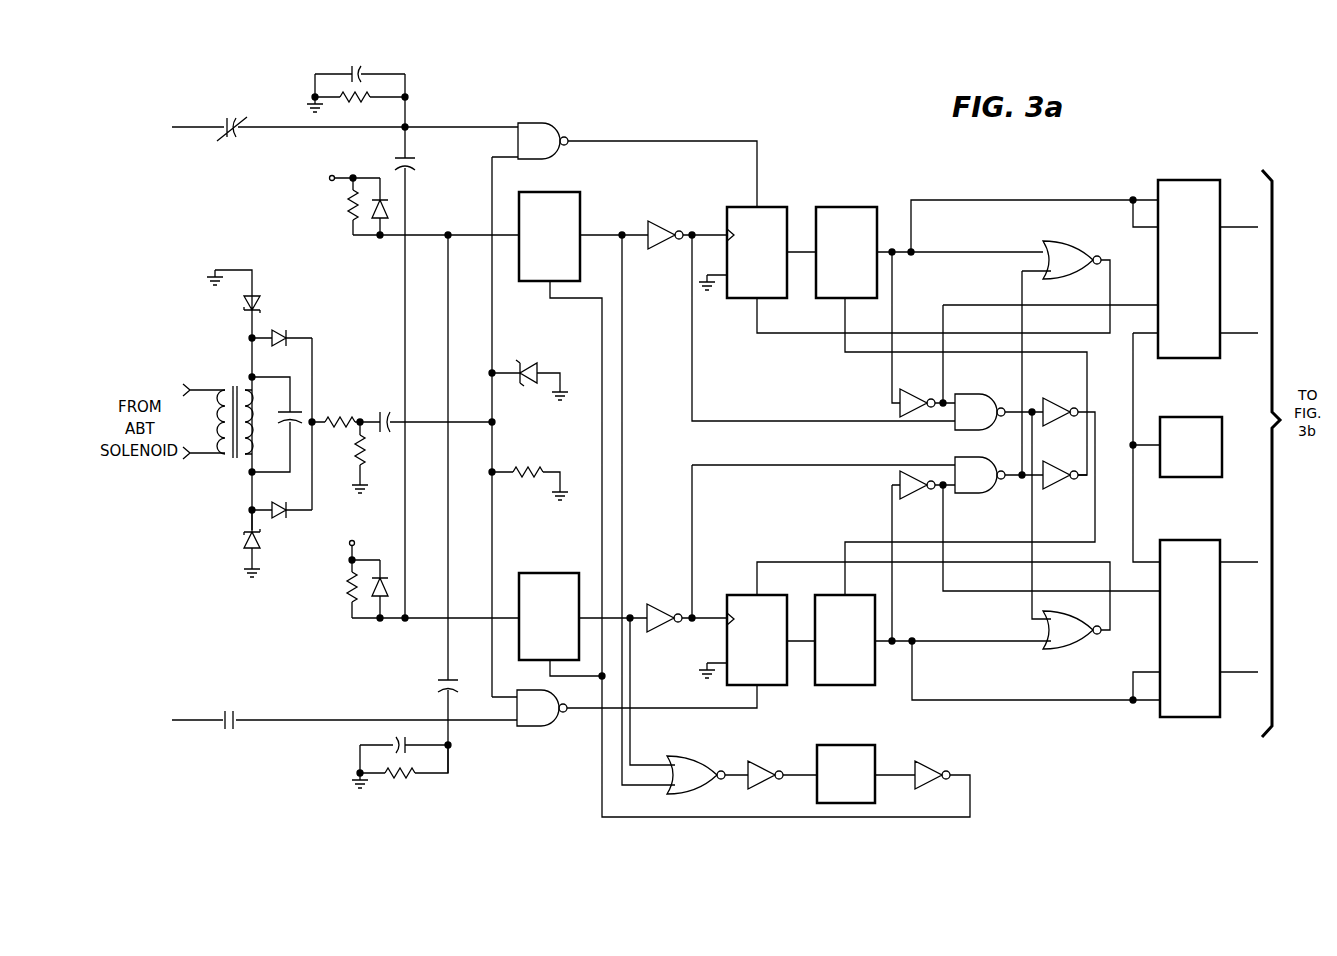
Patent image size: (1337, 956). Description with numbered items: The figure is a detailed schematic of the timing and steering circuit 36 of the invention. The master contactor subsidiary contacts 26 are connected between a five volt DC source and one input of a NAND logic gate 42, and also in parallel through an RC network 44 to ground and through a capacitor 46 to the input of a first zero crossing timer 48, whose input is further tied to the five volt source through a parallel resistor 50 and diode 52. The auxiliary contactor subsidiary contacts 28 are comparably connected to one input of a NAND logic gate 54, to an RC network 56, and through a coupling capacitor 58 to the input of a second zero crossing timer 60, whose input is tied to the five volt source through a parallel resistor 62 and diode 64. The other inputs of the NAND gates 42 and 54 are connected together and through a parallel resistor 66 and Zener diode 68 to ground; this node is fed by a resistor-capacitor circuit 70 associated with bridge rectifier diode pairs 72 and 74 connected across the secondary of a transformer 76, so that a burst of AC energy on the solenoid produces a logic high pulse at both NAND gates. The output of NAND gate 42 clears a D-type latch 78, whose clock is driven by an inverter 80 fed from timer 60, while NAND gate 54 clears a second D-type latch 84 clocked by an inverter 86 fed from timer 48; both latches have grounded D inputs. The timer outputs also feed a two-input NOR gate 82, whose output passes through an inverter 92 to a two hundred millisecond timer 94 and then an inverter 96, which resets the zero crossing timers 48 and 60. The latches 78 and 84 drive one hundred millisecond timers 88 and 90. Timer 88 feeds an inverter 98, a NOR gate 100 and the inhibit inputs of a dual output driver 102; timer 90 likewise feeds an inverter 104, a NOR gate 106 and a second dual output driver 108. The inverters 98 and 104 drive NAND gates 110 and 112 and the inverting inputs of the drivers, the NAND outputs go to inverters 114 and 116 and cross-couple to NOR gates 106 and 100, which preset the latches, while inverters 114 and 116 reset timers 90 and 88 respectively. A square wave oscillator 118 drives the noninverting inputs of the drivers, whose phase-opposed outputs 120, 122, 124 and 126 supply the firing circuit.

The contactor subsidiary contacts 26 is at (238, 131).
The contactor subsidiary contacts 28 is at (236, 722).
The timing and steering circuit 36 is at (845, 168).
The NAND logic gate 42 is at (566, 127).
The RC network 44 is at (421, 81).
The capacitor 46 is at (415, 162).
The first zero crossing timer 48 is at (541, 573).
The resistor 50 is at (348, 592).
The diode 52 is at (392, 584).
The NAND logic gate 54 is at (540, 727).
The RC network 56 is at (450, 788).
The coupling capacitor 58 is at (441, 681).
The second zero crossing timer 60 is at (578, 193).
The resistor 62 is at (348, 210).
The diode 64 is at (388, 210).
The resistor 66 is at (523, 468).
The Zener diode 68 is at (530, 367).
The resistor-capacitor circuit 70 is at (400, 433).
The bridge rectifier diode pair 72 is at (286, 319).
The bridge rectifier diode pair 74 is at (279, 532).
The transformer 76 is at (236, 470).
The D-type latch 78 is at (770, 207).
The inverter 80 is at (665, 228).
The two-input NOR gate 82 is at (680, 760).
The second D-type latch 84 is at (728, 595).
The inverter 86 is at (660, 603).
The 100 millisecond timer 88 is at (868, 207).
The 100 millisecond timer 90 is at (860, 597).
The inverter 92 is at (762, 760).
The 200 millisecond timer 94 is at (836, 745).
The inverter 96 is at (930, 768).
The inverter 98 is at (905, 388).
The NOR logic gate 100 is at (1080, 251).
The dual output driver 102 is at (1193, 358).
The inverter 104 is at (910, 500).
The NOR logic gate 106 is at (1062, 652).
The second dual output driver 108 is at (1183, 540).
The NAND gate 110 is at (978, 394).
The NAND gate 112 is at (980, 494).
The inverter 114 is at (1048, 394).
The inverter 116 is at (1055, 494).
The square wave oscillator 118 is at (1203, 418).
The output 120 is at (1250, 230).
The output 122 is at (1250, 335).
The output 124 is at (1250, 564).
The output 126 is at (1250, 674).